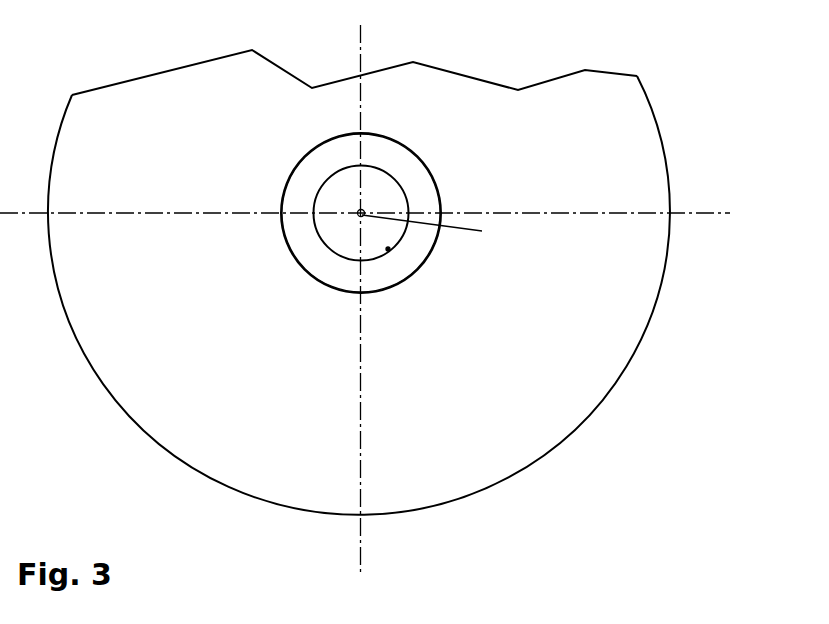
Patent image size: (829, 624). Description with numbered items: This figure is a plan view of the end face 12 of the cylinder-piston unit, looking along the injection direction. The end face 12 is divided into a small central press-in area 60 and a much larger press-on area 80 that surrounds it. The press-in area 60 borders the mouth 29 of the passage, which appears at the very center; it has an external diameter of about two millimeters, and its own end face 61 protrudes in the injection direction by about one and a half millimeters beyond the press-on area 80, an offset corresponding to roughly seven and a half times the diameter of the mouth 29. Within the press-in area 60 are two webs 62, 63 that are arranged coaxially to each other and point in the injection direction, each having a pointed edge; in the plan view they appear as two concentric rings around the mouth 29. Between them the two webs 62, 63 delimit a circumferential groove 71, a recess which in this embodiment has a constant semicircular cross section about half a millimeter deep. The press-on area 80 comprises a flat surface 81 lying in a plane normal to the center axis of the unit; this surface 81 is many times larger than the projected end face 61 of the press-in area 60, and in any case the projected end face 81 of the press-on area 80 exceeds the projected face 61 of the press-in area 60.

The end face 12 is at (446, 140).
The mouth 29 is at (364, 195).
The press-in area 60 is at (306, 180).
The end face of the press-in area 61 is at (409, 178).
The web 62 is at (441, 120).
The web 63 is at (473, 142).
The circumferential groove 71 is at (334, 162).
The press-on area 80 is at (138, 155).
The flat surface 81 is at (210, 168).